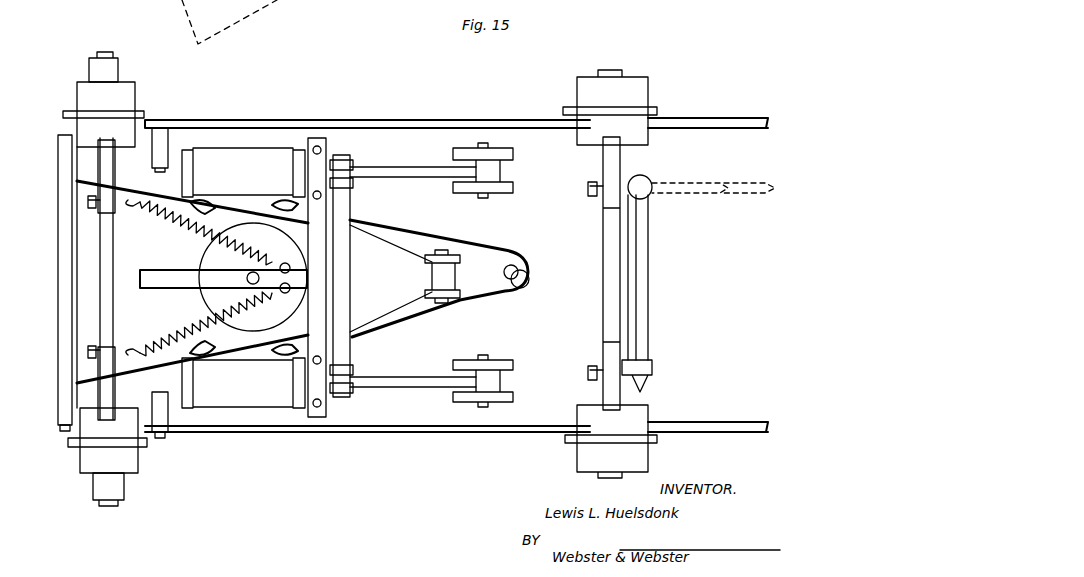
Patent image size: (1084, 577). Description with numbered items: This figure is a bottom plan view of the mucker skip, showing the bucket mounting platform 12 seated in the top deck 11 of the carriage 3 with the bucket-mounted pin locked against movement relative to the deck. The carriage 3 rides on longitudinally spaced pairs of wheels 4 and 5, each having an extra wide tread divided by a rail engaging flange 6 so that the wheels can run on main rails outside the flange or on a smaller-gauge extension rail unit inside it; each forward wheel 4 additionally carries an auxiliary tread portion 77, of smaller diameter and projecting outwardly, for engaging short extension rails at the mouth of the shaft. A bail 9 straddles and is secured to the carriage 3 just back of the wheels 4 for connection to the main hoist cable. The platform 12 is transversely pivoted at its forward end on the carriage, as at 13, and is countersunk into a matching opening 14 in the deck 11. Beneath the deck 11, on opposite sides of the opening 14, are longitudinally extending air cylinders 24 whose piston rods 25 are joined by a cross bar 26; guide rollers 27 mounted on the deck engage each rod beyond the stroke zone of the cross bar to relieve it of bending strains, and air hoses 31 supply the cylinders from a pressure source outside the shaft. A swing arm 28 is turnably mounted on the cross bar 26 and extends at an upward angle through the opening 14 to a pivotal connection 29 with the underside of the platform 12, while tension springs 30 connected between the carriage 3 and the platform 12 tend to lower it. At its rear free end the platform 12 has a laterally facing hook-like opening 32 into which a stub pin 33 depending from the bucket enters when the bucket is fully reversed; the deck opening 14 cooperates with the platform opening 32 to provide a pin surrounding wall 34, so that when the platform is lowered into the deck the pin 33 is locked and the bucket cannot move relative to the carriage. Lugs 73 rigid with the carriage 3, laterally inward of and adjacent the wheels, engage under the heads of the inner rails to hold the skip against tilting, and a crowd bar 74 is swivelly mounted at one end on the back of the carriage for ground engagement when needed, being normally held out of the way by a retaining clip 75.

The carriage 3 is at (397, 111).
The wheels 4 is at (125, 95).
The wheels 5 is at (613, 90).
The rail engaging flange 6 is at (144, 114).
The bail 9 is at (696, 120).
The top deck 11 is at (420, 142).
The platform 12 is at (130, 312).
The pivot 13 is at (63, 432).
The opening 14 is at (513, 247).
The air cylinders 24 is at (245, 160).
The piston rods 25 is at (418, 178).
The cross bar 26 is at (348, 352).
The guide rollers 27 is at (500, 168).
The swing arm 28 is at (383, 257).
The pivotal connection 29 is at (448, 252).
The tension springs 30 is at (188, 224).
The air hoses 31 is at (205, 206).
The hook-like opening 32 is at (526, 268).
The stub pin 33 is at (533, 283).
The pin surrounding wall 34 is at (512, 292).
The lugs 73 is at (100, 160).
The crowd bar 74 is at (648, 266).
The retaining clip 75 is at (642, 366).
The auxiliary tread portion 77 is at (110, 62).